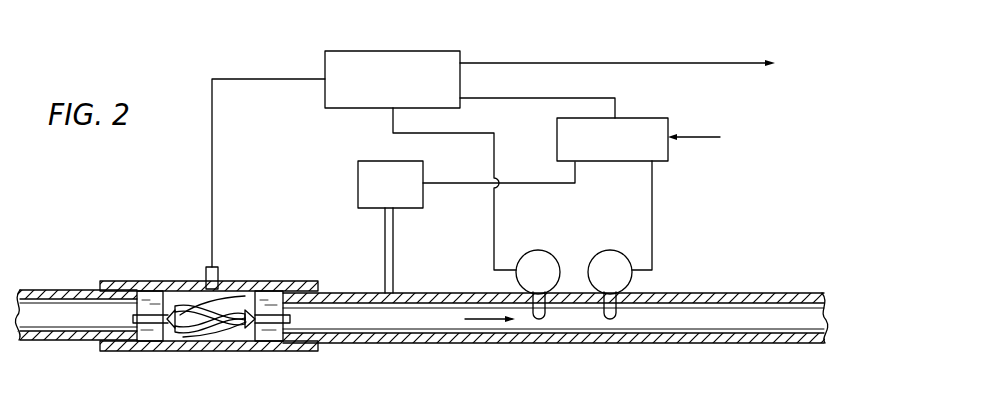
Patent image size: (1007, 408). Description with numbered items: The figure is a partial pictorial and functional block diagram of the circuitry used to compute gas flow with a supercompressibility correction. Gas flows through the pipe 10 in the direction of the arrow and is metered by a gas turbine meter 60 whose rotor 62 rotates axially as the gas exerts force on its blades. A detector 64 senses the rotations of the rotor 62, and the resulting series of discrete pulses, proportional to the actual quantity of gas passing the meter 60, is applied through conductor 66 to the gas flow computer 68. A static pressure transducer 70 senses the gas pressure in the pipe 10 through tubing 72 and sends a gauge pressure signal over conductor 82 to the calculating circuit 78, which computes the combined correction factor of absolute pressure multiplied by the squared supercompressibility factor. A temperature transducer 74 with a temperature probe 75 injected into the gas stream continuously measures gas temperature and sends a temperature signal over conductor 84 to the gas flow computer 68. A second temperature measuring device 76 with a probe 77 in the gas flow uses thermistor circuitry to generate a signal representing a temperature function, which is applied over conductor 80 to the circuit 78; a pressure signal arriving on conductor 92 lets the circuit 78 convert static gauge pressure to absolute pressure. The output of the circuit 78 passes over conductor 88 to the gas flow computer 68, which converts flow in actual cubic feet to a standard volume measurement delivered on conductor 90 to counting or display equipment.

The pipe 10 is at (53, 290).
The gas turbine meter 60 is at (211, 351).
The rotor 62 is at (209, 269).
The detector 64 is at (218, 272).
The conductor 66 is at (213, 186).
The gas flow computer 68 is at (360, 51).
The static pressure transducer 70 is at (355, 186).
The tubing 72 is at (396, 253).
The temperature transducer 74 is at (544, 250).
The temperature probe 75 is at (540, 322).
The second temperature measuring device 76 is at (612, 250).
The probe 77 is at (613, 322).
The calculating circuit 78 is at (669, 153).
The conductor 80 is at (656, 222).
The conductor 82 is at (525, 185).
The conductor 84 is at (482, 131).
The conductor 88 is at (527, 98).
The conductor 90 is at (580, 62).
The conductor 92 is at (703, 135).